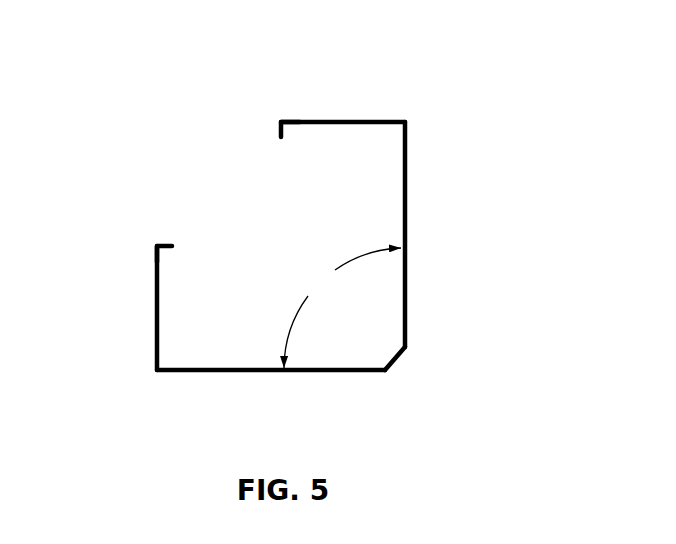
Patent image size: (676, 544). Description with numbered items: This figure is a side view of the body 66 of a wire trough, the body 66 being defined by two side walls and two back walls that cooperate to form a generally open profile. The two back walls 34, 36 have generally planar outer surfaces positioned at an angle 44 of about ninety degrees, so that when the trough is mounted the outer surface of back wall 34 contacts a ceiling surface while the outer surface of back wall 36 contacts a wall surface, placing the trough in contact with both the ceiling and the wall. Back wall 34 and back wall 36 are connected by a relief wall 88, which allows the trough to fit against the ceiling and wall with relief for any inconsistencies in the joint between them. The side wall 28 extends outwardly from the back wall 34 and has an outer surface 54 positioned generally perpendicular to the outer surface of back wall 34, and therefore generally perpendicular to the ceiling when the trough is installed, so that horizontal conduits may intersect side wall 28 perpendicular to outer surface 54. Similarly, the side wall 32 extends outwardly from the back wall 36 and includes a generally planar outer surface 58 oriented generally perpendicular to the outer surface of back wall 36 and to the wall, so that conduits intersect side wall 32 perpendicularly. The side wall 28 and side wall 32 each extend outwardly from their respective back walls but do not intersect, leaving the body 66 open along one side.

The body 66 is at (311, 253).
The side wall 28 is at (366, 120).
The outer surface 54 is at (318, 118).
The back wall 34 is at (409, 212).
The relief wall 88 is at (401, 358).
The back wall 36 is at (223, 373).
The side wall 32 is at (155, 332).
The outer surface 58 is at (154, 313).
The angle 44 is at (342, 308).